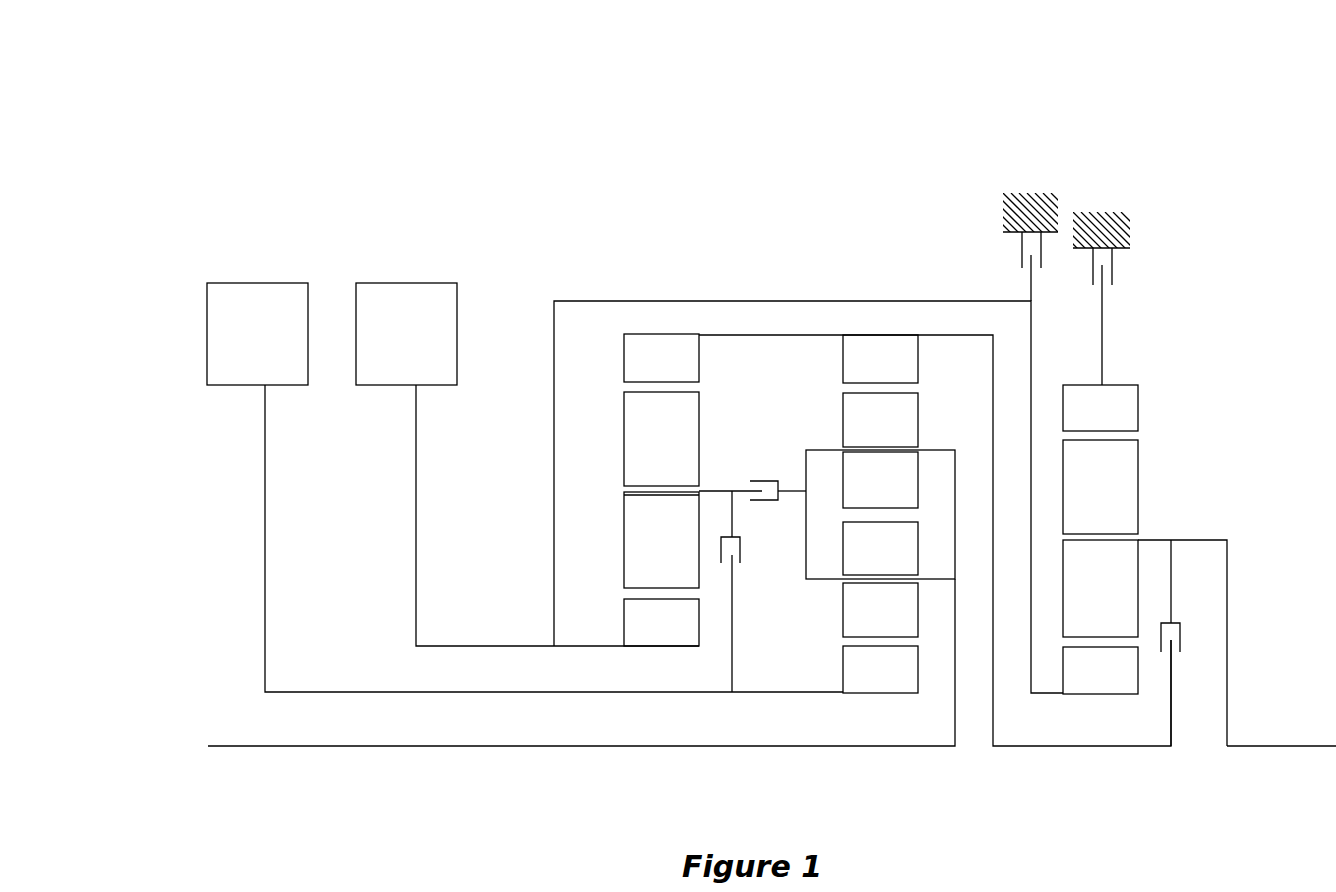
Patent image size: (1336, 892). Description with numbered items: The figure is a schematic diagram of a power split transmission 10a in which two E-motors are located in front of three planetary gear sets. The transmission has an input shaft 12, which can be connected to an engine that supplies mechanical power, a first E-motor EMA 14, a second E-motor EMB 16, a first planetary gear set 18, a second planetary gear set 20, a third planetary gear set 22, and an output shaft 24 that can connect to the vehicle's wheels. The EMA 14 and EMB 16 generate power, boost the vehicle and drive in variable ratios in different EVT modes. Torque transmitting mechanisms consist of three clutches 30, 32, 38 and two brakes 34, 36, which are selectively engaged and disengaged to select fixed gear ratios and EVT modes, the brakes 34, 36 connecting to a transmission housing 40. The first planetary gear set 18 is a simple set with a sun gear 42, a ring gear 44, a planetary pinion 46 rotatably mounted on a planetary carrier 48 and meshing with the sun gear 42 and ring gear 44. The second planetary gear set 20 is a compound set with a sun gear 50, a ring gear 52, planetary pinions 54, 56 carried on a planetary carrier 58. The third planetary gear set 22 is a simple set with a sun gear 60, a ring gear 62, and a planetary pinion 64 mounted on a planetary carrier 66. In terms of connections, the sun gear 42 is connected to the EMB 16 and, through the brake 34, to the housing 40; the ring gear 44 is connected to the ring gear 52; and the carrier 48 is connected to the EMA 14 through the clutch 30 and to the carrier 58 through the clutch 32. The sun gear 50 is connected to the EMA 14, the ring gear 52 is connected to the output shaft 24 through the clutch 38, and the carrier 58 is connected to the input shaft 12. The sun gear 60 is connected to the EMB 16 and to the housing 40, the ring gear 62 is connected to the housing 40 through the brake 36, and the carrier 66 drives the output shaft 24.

The power split transmission 10a is at (718, 124).
The input shaft 12 is at (256, 746).
The first E-motor (EMA) 14 is at (265, 283).
The second E-motor (EMB) 16 is at (416, 283).
The first planetary gear set 18 is at (666, 264).
The second planetary gear set 20 is at (872, 264).
The third planetary gear set 22 is at (1196, 412).
The output shaft 24 is at (1290, 748).
The clutch 30 is at (760, 560).
The clutch 32 is at (784, 474).
The brake 34 is at (990, 246).
The brake 36 is at (1136, 270).
The clutch 38 is at (1190, 617).
The transmission housing 40 is at (1033, 176).
The sun gear 42 is at (624, 621).
The ring gear 44 is at (624, 358).
The planetary pinion 46 is at (624, 443).
The planetary carrier 48 is at (722, 490).
The sun gear 50 is at (893, 693).
The ring gear 52 is at (843, 360).
The planetary pinion 54 is at (918, 426).
The planetary pinion 56 is at (842, 594).
The planetary carrier 58 is at (955, 518).
The sun gear 60 is at (1105, 695).
The ring gear 62 is at (1140, 408).
The planetary pinion 64 is at (1140, 502).
The planetary carrier 66 is at (1200, 540).